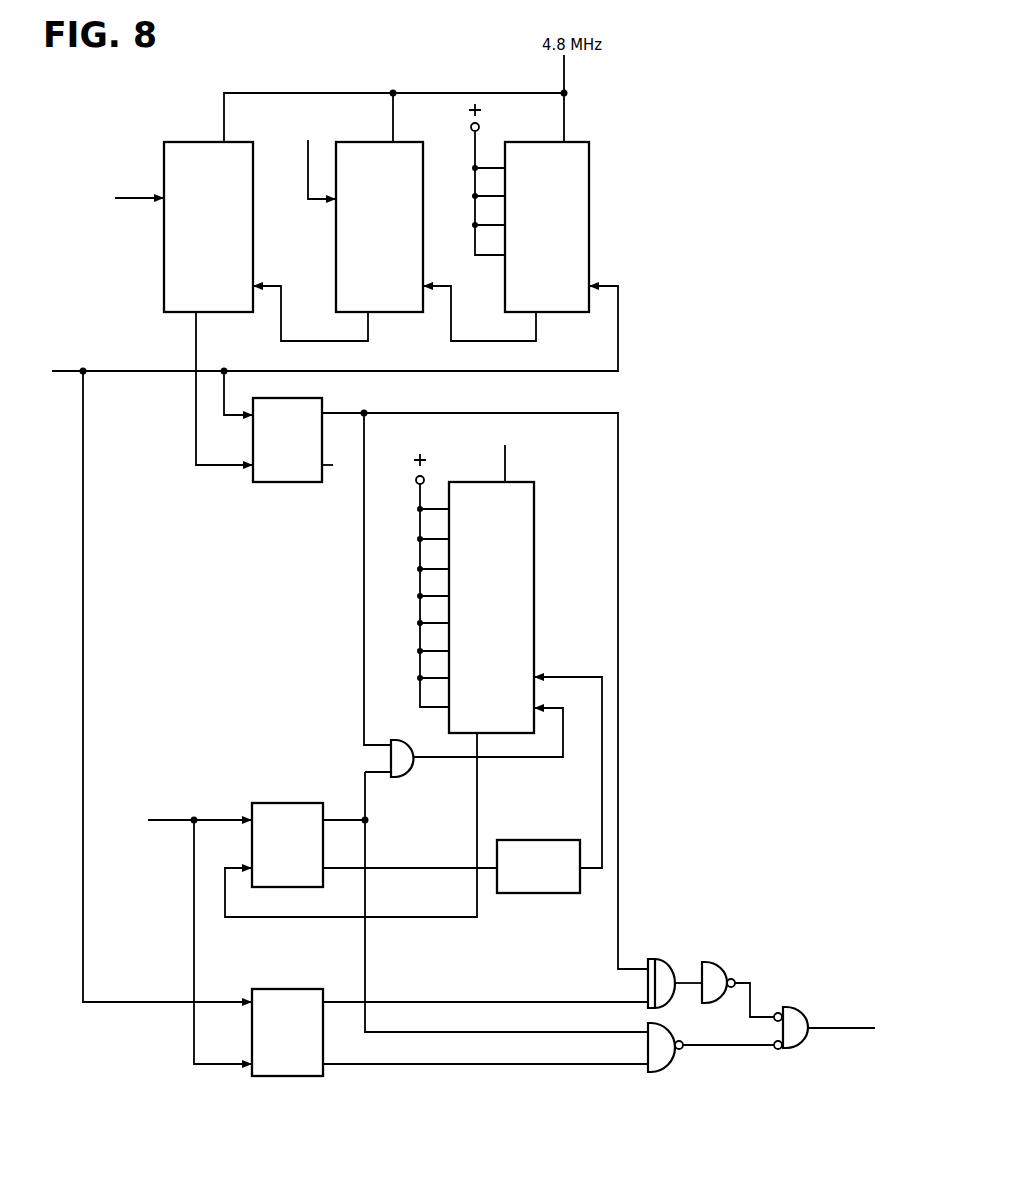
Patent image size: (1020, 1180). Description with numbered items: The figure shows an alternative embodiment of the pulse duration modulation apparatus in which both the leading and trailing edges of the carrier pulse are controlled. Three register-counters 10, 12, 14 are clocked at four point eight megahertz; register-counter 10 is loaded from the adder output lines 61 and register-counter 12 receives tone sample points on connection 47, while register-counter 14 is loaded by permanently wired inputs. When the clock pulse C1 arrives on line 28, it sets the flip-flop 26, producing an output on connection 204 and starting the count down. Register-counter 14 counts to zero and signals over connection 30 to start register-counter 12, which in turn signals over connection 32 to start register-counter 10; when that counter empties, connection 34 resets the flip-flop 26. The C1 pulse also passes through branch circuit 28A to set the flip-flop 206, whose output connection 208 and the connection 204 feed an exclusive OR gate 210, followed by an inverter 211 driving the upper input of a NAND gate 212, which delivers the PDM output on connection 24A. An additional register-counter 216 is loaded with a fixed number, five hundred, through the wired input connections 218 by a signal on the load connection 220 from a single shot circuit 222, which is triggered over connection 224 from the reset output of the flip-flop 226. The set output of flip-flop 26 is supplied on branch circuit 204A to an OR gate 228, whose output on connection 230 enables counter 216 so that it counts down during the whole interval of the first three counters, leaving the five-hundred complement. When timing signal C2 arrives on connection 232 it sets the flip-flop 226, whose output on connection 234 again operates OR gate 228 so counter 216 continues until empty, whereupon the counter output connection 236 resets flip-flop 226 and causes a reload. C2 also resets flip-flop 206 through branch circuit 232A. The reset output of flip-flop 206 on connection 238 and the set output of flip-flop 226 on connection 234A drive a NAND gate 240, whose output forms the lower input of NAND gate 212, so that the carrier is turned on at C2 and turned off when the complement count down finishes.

The register-counter 10 is at (186, 118).
The register-counter 12 is at (366, 142).
The register-counter 14 is at (538, 118).
The adder output lines 61 is at (125, 193).
The connection 47 is at (307, 156).
The connection 32 is at (281, 322).
The connection 30 is at (451, 322).
The set input connection 28 is at (62, 370).
The branch circuit 28A is at (83, 632).
The connection 34 is at (197, 419).
The flip-flop 26 is at (309, 398).
The output connection 204 is at (425, 412).
The branch circuit 204A is at (364, 583).
The register-counter 216 is at (534, 553).
The permanently wired input connections 218 is at (420, 525).
The OR gate 228 is at (407, 740).
The connection 234 is at (365, 778).
The counter output connection 236 is at (477, 787).
The connection 230 is at (563, 740).
The load input L connection 220 is at (602, 798).
The flip-flop 226 is at (281, 803).
The connection 232 is at (160, 820).
The branch circuit 232A is at (194, 952).
The connection 224 is at (427, 848).
The single shot circuit 222 is at (560, 893).
The flip-flop 206 is at (290, 989).
The output connection 208 is at (390, 1002).
The connection 234A is at (432, 1033).
The connection 238 is at (495, 1065).
The exclusive OR gate 210 is at (660, 960).
The inverter 211 is at (716, 962).
The NAND gate 212 is at (795, 1007).
The NAND gate 240 is at (668, 1063).
The pulse duration modulation connection 24A is at (848, 1030).